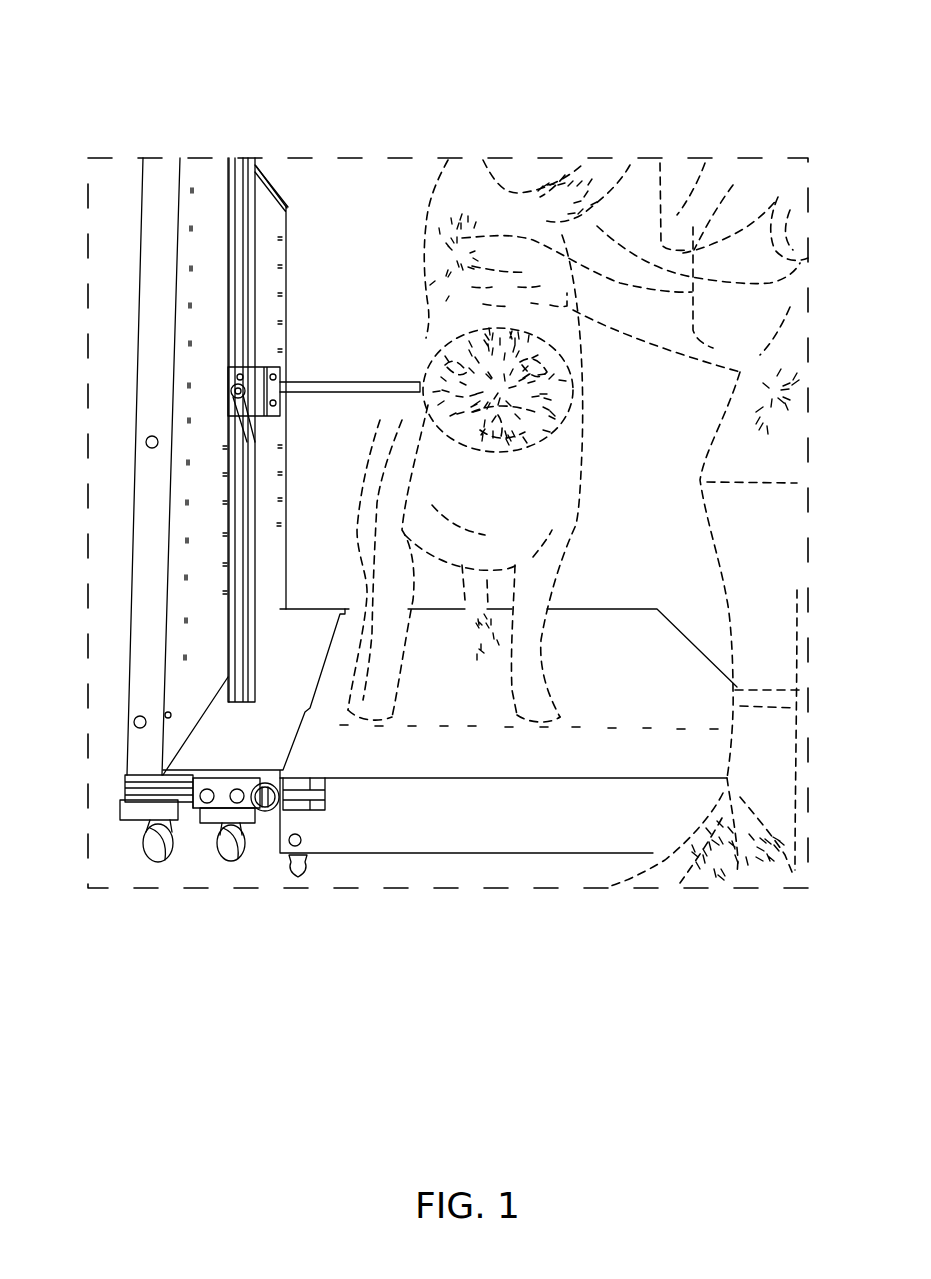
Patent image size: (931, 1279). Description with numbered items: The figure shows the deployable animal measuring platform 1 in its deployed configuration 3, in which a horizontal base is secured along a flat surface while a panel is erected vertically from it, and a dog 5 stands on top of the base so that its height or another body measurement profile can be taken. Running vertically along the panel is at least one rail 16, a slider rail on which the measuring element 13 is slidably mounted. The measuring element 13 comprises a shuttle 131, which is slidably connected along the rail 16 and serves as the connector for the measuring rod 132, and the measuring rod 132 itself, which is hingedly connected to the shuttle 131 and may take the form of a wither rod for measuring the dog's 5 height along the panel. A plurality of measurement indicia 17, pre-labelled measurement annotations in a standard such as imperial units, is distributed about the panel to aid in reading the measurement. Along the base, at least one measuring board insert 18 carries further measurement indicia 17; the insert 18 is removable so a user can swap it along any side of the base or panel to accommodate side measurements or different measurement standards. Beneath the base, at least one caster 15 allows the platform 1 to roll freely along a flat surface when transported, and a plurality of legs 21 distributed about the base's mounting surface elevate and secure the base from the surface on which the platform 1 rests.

The deployable animal measuring platform 1 is at (590, 83).
The deployed configuration 3 is at (397, 520).
The dog 5 is at (583, 398).
The measuring element 13 is at (313, 433).
The shuttle 131 is at (265, 362).
The measuring rod 132 is at (332, 378).
The caster 15 is at (162, 860).
The rail 16 is at (253, 302).
The measurement indicia 17 is at (284, 258).
The measuring board insert 18 is at (390, 777).
The legs 21 is at (298, 870).